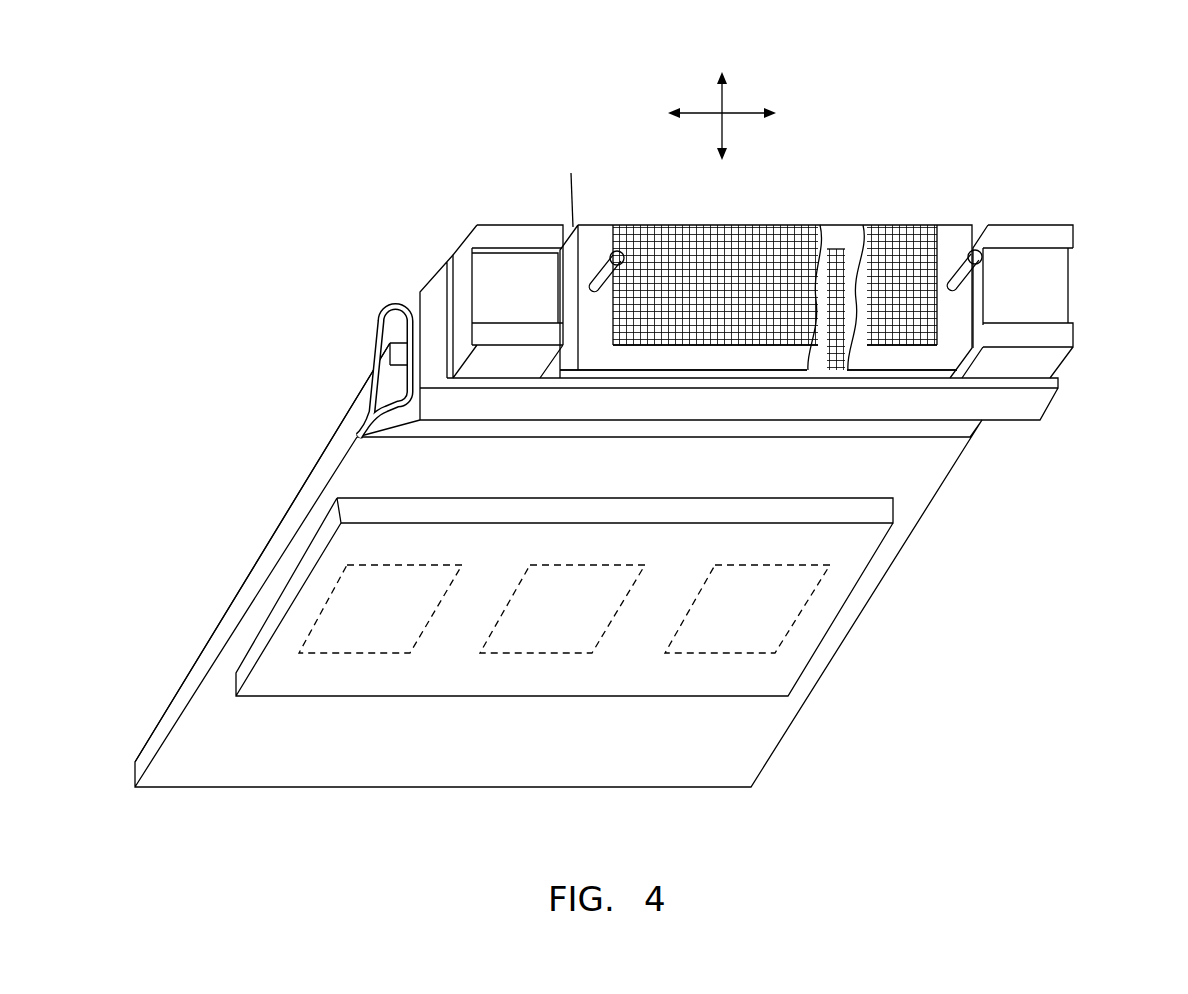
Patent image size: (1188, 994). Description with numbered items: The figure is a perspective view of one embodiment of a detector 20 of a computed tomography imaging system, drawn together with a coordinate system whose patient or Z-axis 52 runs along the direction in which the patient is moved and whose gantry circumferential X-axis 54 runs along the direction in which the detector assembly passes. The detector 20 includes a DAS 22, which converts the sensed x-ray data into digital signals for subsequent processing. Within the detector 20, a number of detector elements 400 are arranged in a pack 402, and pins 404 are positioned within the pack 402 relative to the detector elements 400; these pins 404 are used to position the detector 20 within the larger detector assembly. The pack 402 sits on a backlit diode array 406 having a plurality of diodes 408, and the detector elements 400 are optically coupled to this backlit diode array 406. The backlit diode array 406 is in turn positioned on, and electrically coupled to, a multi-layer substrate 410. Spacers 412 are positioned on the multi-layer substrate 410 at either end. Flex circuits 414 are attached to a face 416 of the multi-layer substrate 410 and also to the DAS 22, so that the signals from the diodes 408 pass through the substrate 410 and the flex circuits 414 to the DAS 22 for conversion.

The detector 20 is at (1072, 106).
The data acquisition system 22 is at (845, 622).
The Z-axis 52 is at (742, 117).
The X-axis 54 is at (720, 98).
The detector elements 400 is at (697, 238).
The pack 402 is at (615, 192).
The pins 404 is at (953, 265).
The backlit diode array 406 is at (930, 372).
The diodes 408 is at (823, 222).
The multi-layer substrate 410 is at (1040, 406).
The spacers 412 is at (510, 225).
The flex circuits 414 is at (356, 383).
The face 416 is at (418, 290).